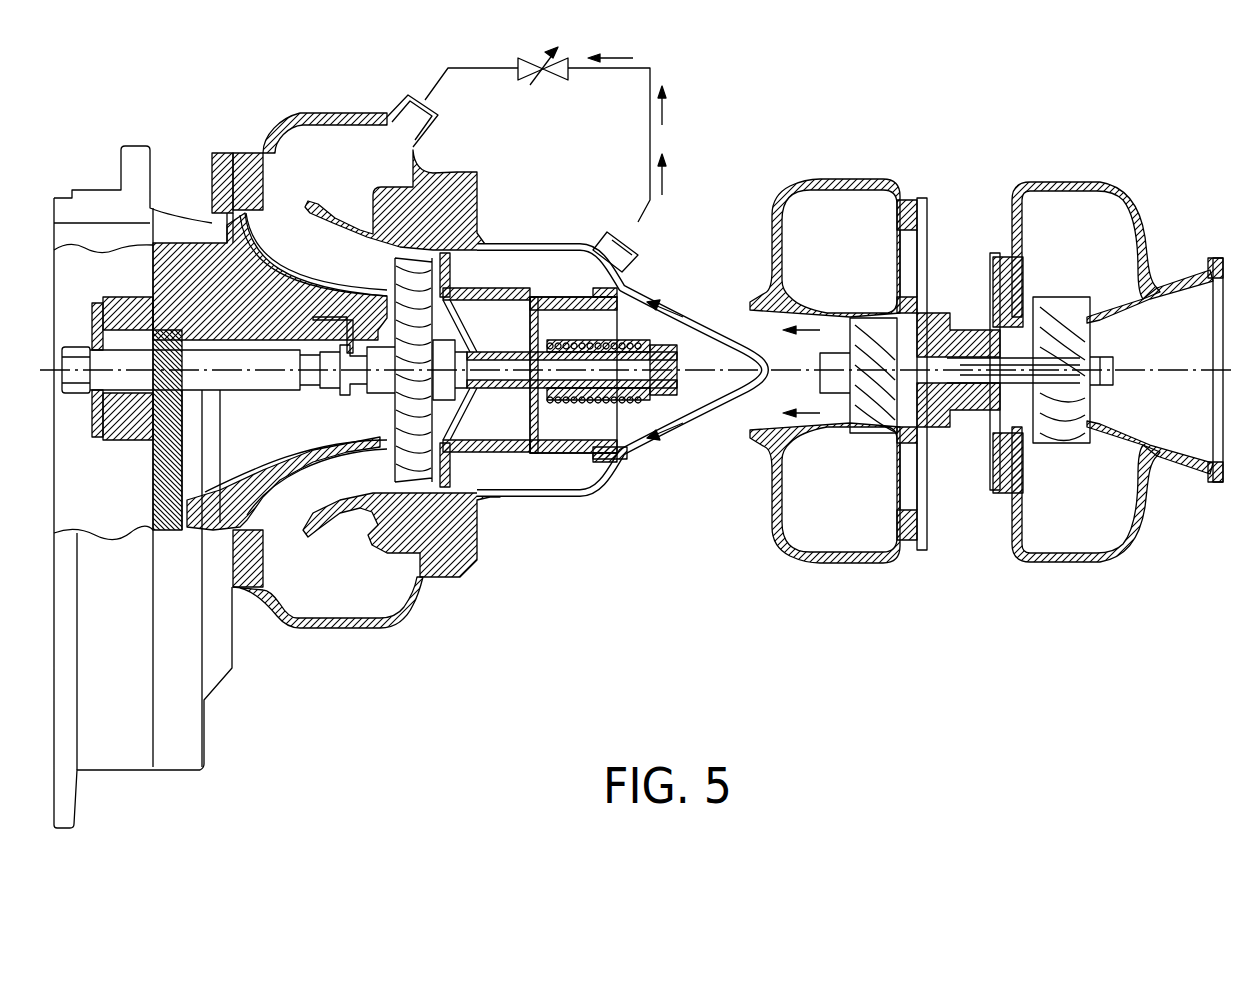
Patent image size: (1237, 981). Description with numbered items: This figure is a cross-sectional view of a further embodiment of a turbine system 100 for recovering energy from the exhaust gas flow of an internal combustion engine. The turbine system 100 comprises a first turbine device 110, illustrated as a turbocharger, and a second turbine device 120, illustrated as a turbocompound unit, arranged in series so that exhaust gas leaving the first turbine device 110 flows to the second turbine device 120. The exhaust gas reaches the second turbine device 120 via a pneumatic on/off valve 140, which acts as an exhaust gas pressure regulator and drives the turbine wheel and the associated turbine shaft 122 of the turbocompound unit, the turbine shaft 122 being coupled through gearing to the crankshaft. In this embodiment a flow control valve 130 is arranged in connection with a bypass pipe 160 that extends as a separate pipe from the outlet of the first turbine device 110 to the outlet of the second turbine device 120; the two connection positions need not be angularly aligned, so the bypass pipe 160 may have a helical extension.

The turbine system 100 is at (745, 677).
The first turbine device 110 is at (979, 584).
The second turbine device 120 is at (350, 675).
The turbine shaft 122 is at (328, 158).
The flow control valve 130 is at (530, 58).
The on/off valve 140 is at (670, 428).
The bypass pipe 160 is at (655, 143).